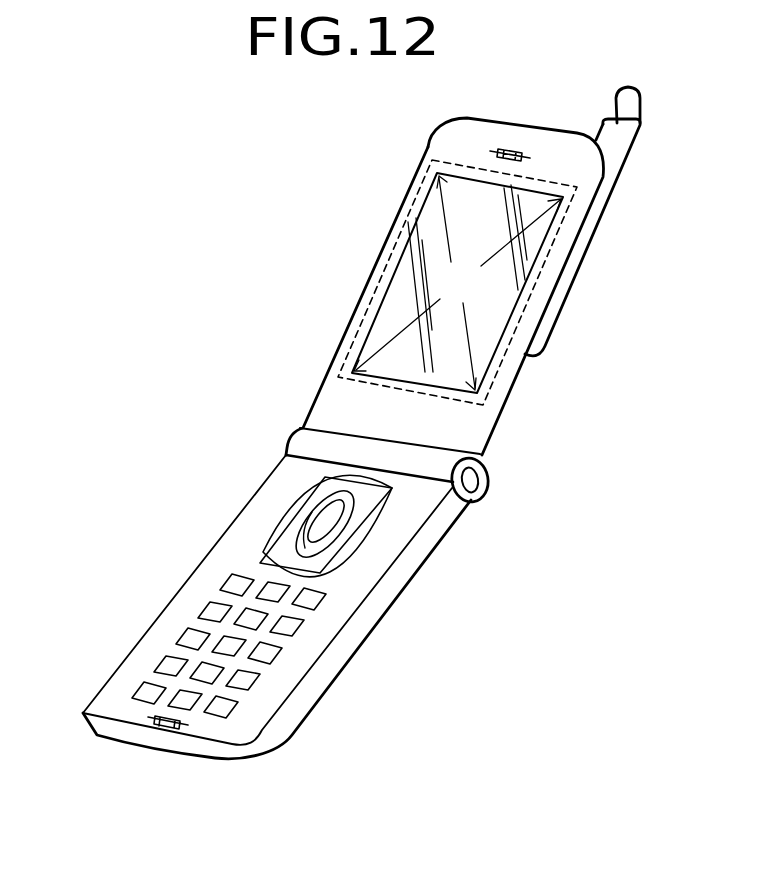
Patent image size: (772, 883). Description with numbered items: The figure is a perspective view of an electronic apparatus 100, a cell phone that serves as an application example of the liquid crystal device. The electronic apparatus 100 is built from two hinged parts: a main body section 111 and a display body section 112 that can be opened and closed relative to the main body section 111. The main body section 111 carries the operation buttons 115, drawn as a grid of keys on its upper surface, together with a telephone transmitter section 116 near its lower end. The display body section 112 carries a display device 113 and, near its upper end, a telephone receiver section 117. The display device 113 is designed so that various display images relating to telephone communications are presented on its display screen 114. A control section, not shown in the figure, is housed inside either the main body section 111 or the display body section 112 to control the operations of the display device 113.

The electronic apparatus 100 is at (372, 114).
The main body section 111 is at (262, 447).
The display body section 112 is at (679, 95).
The display device 113 is at (385, 268).
The display screen 114 is at (457, 283).
The operation buttons 115 is at (250, 668).
The telephone transmitter section 116 is at (160, 731).
The telephone receiver section 117 is at (508, 148).